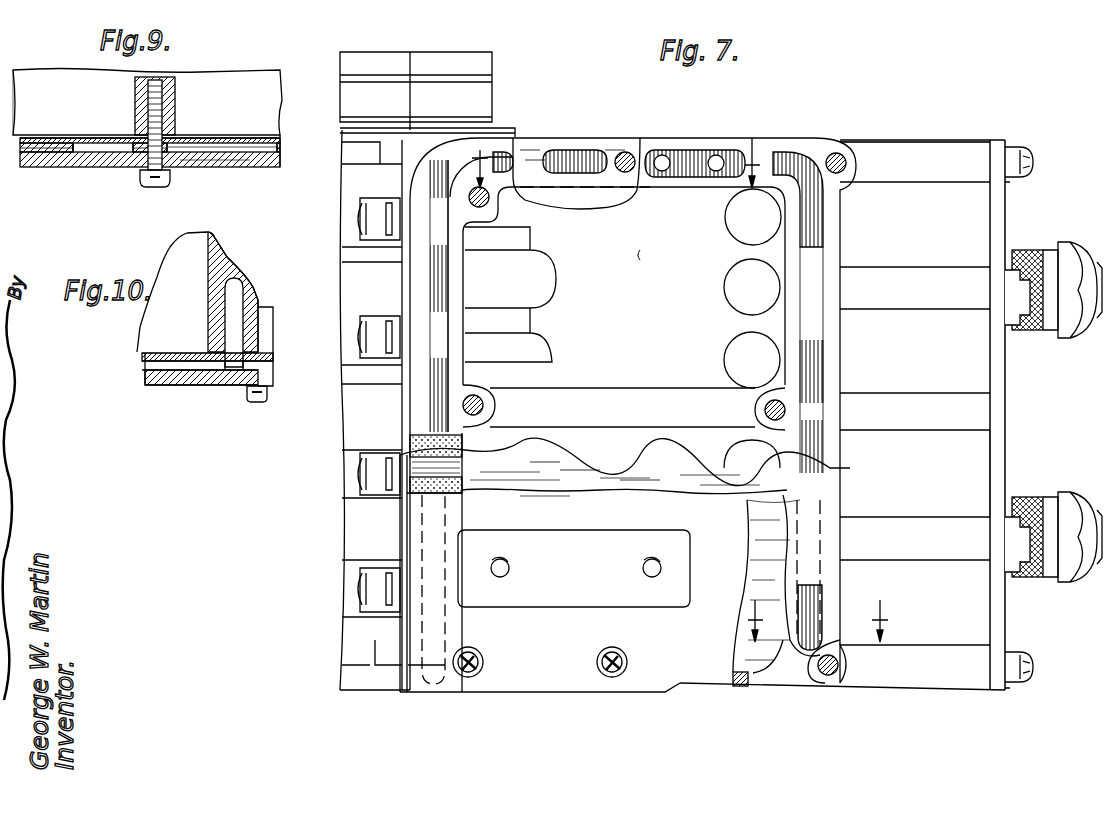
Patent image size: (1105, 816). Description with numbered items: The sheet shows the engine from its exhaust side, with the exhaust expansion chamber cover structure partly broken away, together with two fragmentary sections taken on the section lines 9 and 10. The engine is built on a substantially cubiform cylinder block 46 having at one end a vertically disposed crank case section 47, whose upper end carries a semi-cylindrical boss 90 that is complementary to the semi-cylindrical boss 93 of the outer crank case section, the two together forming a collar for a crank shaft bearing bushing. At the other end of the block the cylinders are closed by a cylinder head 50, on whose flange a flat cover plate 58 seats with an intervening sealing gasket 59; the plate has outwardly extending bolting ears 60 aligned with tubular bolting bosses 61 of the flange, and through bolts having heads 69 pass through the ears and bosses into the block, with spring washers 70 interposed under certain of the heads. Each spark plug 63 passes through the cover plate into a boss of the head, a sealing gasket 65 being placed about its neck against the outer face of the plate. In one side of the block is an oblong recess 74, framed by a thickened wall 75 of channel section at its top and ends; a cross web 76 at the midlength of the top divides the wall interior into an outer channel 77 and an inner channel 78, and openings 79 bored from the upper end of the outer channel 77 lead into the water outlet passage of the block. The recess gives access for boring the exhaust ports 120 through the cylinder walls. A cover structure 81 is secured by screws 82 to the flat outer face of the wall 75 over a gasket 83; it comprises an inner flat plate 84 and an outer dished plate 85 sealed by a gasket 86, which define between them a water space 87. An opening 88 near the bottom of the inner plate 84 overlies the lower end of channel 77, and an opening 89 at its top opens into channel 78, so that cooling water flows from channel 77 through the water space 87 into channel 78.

In FIG. 7, the section line 9— 9 is at (610, 149).
In FIG. 7, the section line 10— 10 is at (821, 621).
In FIG. 7, the cylinder block 46 is at (646, 248).
In FIG. 7, the crank case section 47 is at (530, 298).
In FIG. 7, the cylinder head 50 is at (984, 233).
In FIG. 7, the cover plate 58 is at (1002, 450).
In FIG. 7, the sealing gasket 59 is at (990, 142).
In FIG. 7, the bolting ears 60 is at (1008, 142).
In FIG. 7, the bolting bosses 61 is at (921, 148).
In FIG. 7, the spark plug 63 is at (1072, 246).
In FIG. 7, the sealing gasket 65 is at (1018, 256).
In FIG. 7, the bolt heads 69 is at (1035, 163).
In FIG. 7, the spring washers 70 is at (1008, 179).
In FIG. 9, the recess 74 is at (193, 224).
In FIG. 10, the recess 74 is at (190, 243).
In FIG. 9, the thickened wall 75 is at (258, 90).
In FIG. 10, the thickened wall 75 is at (263, 302).
In FIG. 7, the thickened wall 75 is at (845, 232).
In FIG. 9, the cross web 76 is at (170, 92).
In FIG. 7, the cross web 76 is at (635, 150).
In FIG. 7, the outer channel 77 is at (815, 363).
In FIG. 7, the inner channel 78 is at (440, 378).
In FIG. 7, the openings 79 is at (715, 148).
In FIG. 9, the cover structure 81 is at (97, 160).
In FIG. 10, the cover structure 81 is at (209, 388).
In FIG. 7, the cover structure 81 is at (559, 690).
In FIG. 9, the screws 82 is at (145, 187).
In FIG. 10, the screws 82 is at (254, 403).
In FIG. 7, the screws 82 is at (489, 203).
In FIG. 9, the gasket 83 is at (280, 139).
In FIG. 10, the gasket 83 is at (262, 356).
In FIG. 7, the gasket 83 is at (464, 443).
In FIG. 9, the inner flat plate 84 is at (213, 145).
In FIG. 10, the inner flat plate 84 is at (165, 352).
In FIG. 7, the inner flat plate 84 is at (568, 205).
In FIG. 9, the outer plate 85 is at (280, 166).
In FIG. 10, the outer plate 85 is at (195, 385).
In FIG. 7, the outer plate 85 is at (606, 512).
In FIG. 9, the gasket 86 is at (187, 153).
In FIG. 10, the gasket 86 is at (262, 366).
In FIG. 7, the gasket 86 is at (464, 488).
In FIG. 9, the water space 87 is at (258, 158).
In FIG. 10, the water space 87 is at (172, 370).
In FIG. 10, the opening 88 is at (233, 372).
In FIG. 7, the opening 88 is at (826, 603).
In FIG. 9, the opening 89 is at (83, 142).
In FIG. 7, the opening 89 is at (565, 148).
In FIG. 7, the semi-cylindrical boss 90 is at (478, 108).
In FIG. 7, the semi-cylindrical boss 93 is at (350, 105).
In FIG. 7, the exhaust ports 120 is at (730, 345).